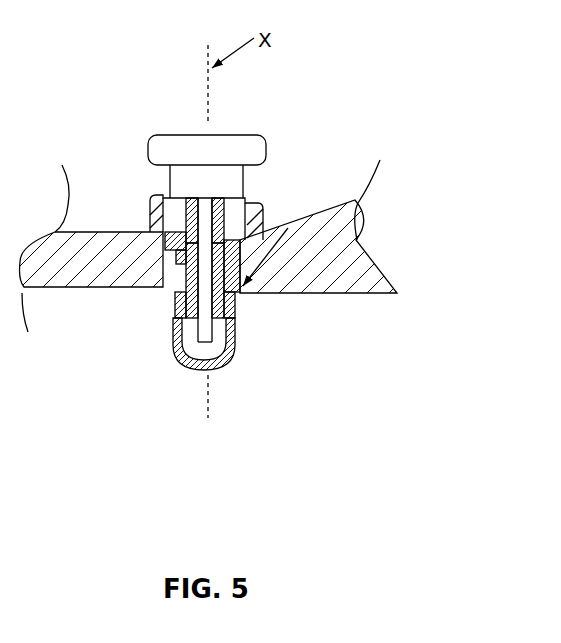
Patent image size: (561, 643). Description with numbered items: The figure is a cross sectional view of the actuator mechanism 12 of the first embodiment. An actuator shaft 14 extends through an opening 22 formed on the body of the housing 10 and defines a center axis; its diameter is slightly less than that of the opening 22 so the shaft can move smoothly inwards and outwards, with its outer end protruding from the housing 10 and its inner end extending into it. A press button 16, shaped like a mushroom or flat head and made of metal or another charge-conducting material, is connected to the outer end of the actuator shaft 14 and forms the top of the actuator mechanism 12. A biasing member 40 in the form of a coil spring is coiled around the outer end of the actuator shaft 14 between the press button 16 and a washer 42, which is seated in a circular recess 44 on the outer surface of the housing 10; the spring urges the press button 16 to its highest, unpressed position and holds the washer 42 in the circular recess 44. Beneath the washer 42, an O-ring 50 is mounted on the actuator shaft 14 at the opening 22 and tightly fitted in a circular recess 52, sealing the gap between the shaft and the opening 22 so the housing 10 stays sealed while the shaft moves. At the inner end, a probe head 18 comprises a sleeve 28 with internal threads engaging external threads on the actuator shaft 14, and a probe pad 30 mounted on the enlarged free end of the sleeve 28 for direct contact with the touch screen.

The actuator mechanism 12 is at (121, 112).
The press button 16 is at (263, 143).
The housing 10 is at (259, 230).
The biasing member 40 is at (231, 212).
The actuator shaft 14 is at (209, 275).
The O-ring 50 is at (223, 258).
The washer 42 is at (238, 248).
The circular recess 44 is at (180, 242).
The circular recess 52 is at (178, 250).
The opening 22 is at (193, 274).
The sleeve 28 is at (223, 308).
The probe pad 30 is at (238, 355).
The probe head 18 is at (452, 380).